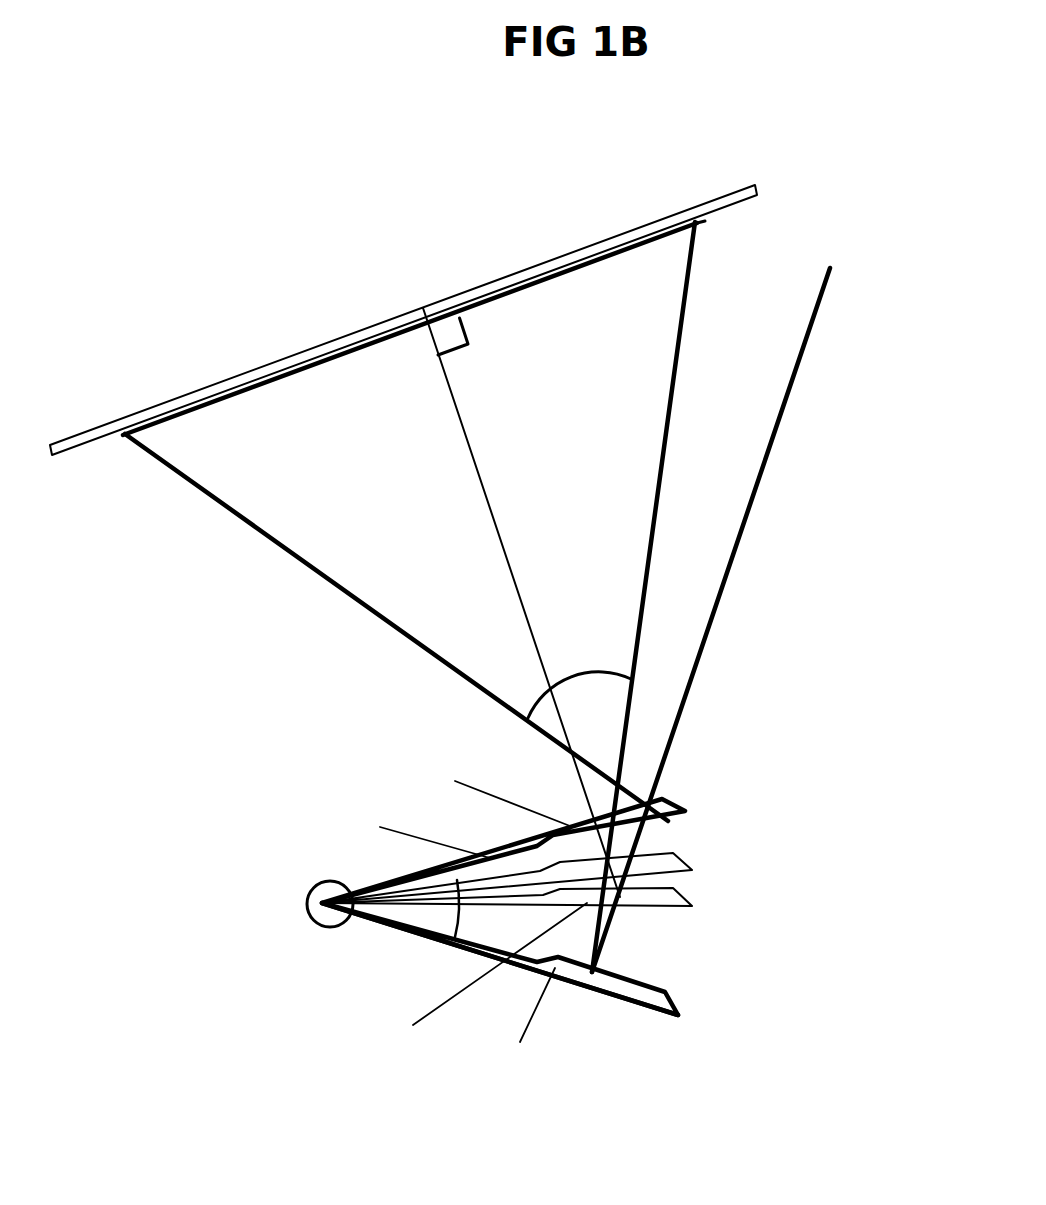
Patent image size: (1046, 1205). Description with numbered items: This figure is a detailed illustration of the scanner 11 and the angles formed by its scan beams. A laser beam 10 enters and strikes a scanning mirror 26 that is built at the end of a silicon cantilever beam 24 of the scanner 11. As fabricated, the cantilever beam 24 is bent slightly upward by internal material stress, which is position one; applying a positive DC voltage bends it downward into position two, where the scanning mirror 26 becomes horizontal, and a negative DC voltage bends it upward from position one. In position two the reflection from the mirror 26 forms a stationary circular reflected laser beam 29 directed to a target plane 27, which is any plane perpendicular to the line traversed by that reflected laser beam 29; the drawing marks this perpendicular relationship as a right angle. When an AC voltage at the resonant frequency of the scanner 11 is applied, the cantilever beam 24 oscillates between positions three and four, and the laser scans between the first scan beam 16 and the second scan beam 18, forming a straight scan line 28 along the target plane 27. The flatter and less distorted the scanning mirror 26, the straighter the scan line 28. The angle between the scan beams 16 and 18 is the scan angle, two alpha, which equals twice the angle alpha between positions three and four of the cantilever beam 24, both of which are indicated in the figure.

The laser beam 10 is at (776, 430).
The MOEMS scanner 11 is at (316, 921).
The first scan beam 16 is at (665, 410).
The second scan beam 18 is at (377, 616).
The silicon cantilever beam 24 is at (473, 955).
The scanning mirror 26 is at (648, 992).
The target plane 27 is at (342, 335).
The scan line 28 is at (572, 266).
The reflected laser beam 29 is at (487, 503).